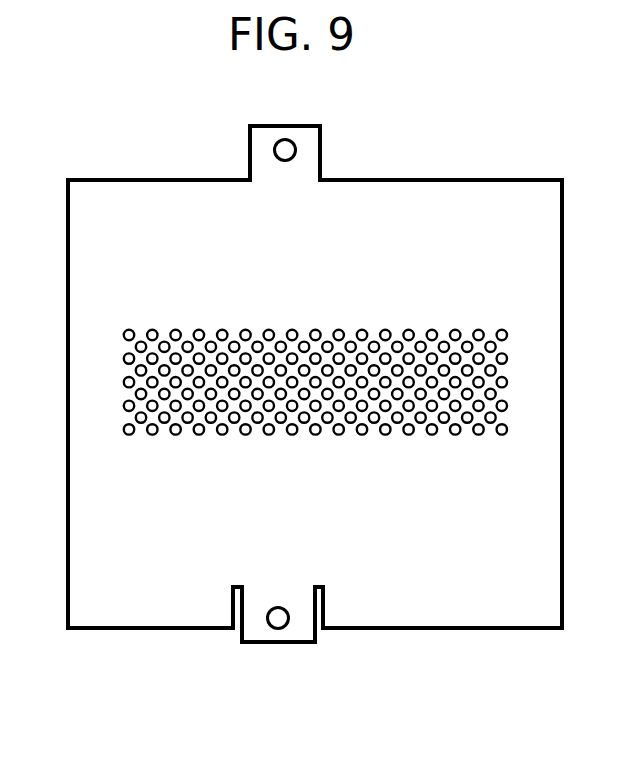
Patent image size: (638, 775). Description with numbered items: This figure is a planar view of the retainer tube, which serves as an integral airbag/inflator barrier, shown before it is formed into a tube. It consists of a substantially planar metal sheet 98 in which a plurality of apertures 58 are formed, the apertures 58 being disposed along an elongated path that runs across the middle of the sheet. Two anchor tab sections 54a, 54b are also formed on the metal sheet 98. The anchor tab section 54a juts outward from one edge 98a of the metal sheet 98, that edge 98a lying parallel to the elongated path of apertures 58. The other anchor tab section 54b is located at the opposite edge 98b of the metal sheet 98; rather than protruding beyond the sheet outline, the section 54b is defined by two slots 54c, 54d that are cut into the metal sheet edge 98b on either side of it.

The metal sheet 98 is at (493, 200).
The edge of the metal sheet 98a is at (145, 143).
The opposite edge of the metal sheet 98b is at (122, 630).
The anchor tab section 54a is at (308, 167).
The anchor tab section 54b is at (290, 635).
The slot 54c is at (240, 633).
The slot 54d is at (322, 630).
The apertures 58 is at (386, 436).